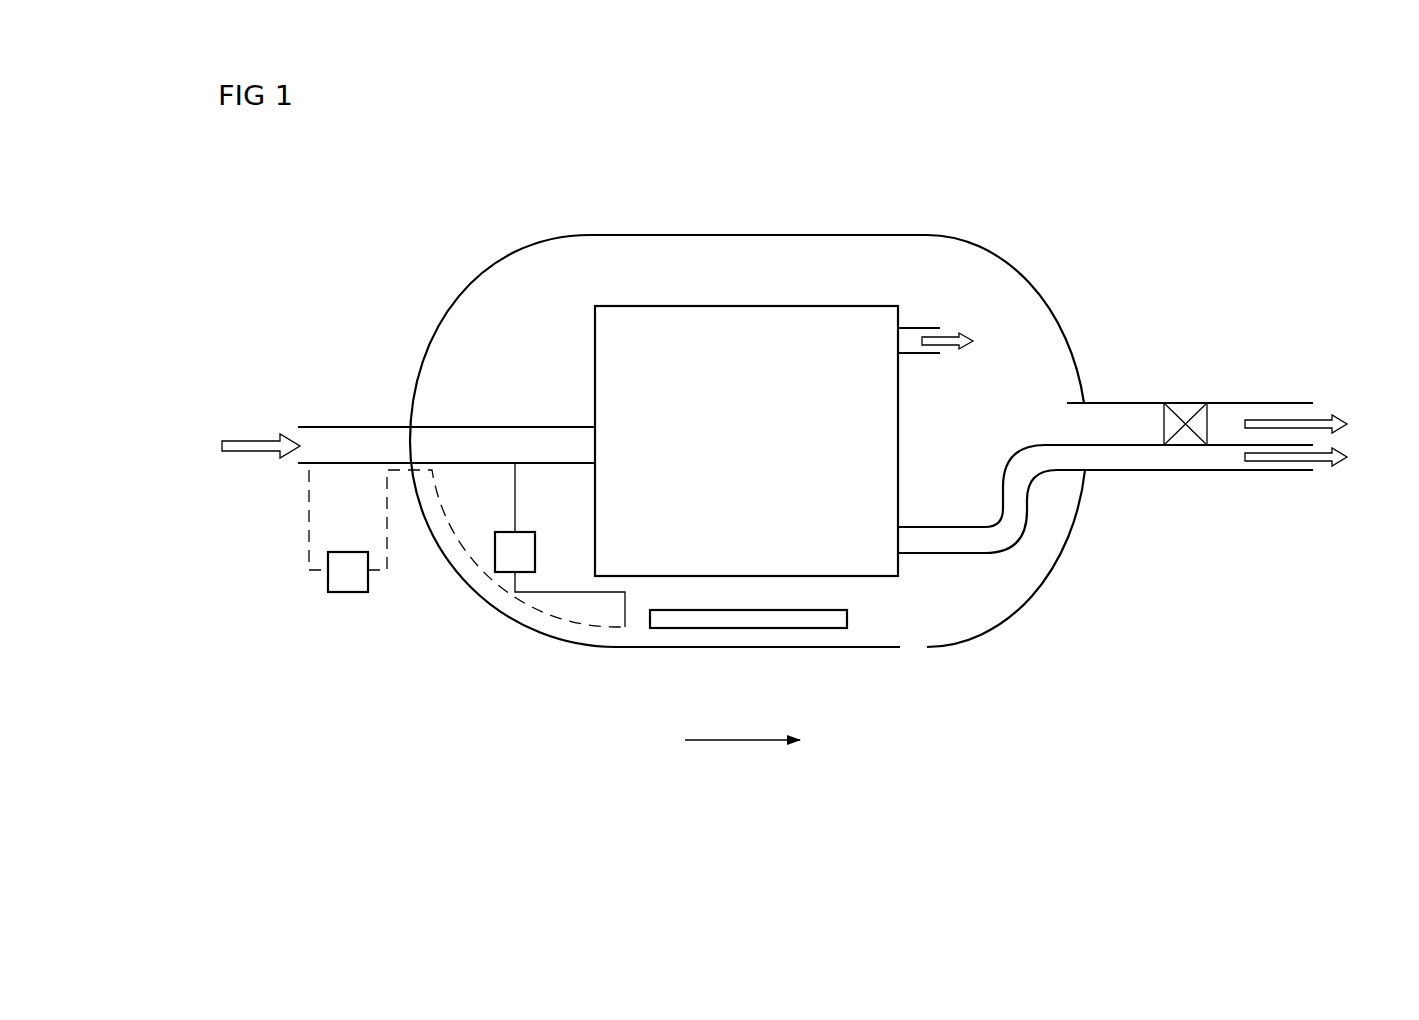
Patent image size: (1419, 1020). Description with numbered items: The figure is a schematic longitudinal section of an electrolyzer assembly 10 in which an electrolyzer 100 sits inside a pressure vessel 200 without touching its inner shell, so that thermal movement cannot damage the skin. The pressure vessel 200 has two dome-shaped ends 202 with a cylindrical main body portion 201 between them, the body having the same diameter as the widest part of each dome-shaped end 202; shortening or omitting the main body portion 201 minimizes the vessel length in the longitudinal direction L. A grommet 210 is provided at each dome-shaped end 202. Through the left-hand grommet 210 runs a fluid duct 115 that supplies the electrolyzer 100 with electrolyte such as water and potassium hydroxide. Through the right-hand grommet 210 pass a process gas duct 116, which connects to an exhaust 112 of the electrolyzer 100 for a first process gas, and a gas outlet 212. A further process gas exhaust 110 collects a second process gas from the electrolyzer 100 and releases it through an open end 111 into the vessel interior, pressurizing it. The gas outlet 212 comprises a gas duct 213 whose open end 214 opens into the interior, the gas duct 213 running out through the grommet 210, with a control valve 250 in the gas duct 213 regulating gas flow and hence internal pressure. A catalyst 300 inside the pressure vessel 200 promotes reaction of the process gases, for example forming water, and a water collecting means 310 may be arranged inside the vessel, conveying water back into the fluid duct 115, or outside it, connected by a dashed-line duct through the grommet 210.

The electrolyzer assembly 10 is at (369, 195).
The electrolyzer 100 is at (812, 306).
The process gas exhaust 110 is at (922, 327).
The open end 111 is at (947, 327).
The exhaust 112 is at (927, 553).
The fluid duct 115 is at (330, 425).
The process gas duct 116 is at (1197, 470).
The pressure vessel 200 is at (613, 219).
The main body portion 201 is at (735, 235).
The dome-shaped end 202 is at (469, 279).
The grommet 210 is at (400, 415).
The gas outlet 212 is at (1308, 396).
The gas duct 213 is at (1252, 403).
The open end 214 is at (1061, 419).
The control valve 250 is at (1193, 405).
The catalyst 300 is at (750, 628).
The water collecting means 310 is at (350, 594).
The longitudinal direction L is at (750, 742).